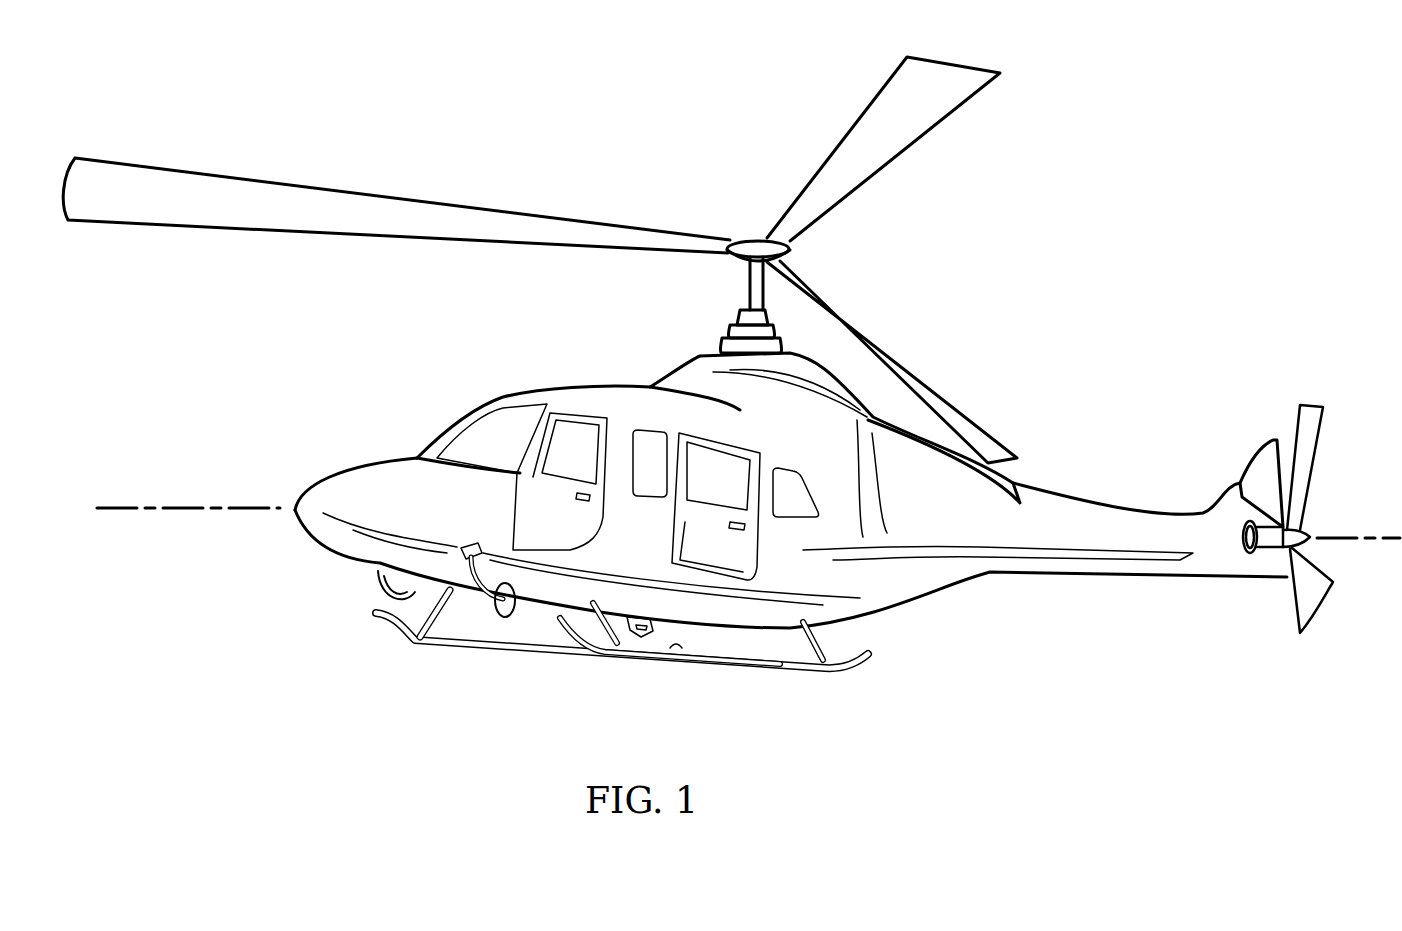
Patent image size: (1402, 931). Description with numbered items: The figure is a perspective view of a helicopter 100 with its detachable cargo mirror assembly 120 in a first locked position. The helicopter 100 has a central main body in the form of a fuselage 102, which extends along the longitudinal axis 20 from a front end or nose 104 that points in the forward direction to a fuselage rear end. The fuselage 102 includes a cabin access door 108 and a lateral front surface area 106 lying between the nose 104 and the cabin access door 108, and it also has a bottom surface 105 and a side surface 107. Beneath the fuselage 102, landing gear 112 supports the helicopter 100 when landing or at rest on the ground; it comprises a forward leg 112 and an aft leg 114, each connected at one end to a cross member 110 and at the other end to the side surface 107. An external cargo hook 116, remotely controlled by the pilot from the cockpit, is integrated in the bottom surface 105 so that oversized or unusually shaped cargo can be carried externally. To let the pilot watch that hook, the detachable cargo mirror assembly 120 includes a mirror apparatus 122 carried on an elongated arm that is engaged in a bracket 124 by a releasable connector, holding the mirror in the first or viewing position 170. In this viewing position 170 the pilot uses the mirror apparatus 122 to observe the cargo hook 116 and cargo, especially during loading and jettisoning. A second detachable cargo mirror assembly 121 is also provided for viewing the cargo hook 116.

The longitudinal axis 20 is at (188, 508).
The helicopter 100 is at (1074, 231).
The fuselage 102 is at (596, 396).
The nose 104 is at (297, 509).
The bottom surface 105 is at (542, 612).
The lateral front surface area 106 is at (492, 487).
The side surface 107 is at (757, 595).
The cabin access door 108 is at (577, 530).
The cross member 110 is at (717, 659).
The landing gear 112 is at (595, 628).
The aft leg 114 is at (833, 645).
The external cargo hook 116 is at (652, 633).
The detachable cargo mirror assembly 120 is at (481, 611).
The detachable cargo mirror assembly 121 is at (369, 582).
The mirror apparatus 122 is at (510, 619).
The bracket 124 is at (470, 544).
The viewing position 170 is at (517, 570).